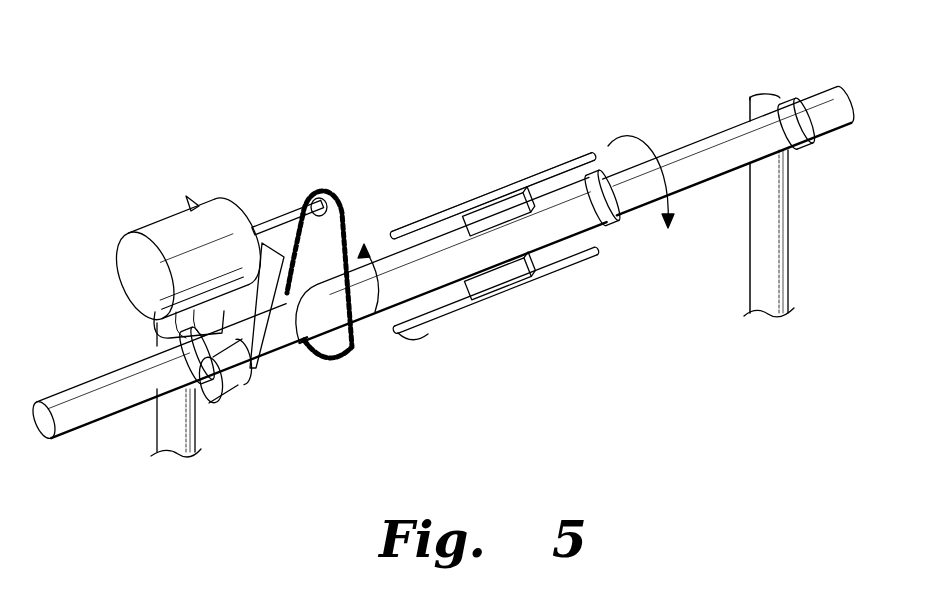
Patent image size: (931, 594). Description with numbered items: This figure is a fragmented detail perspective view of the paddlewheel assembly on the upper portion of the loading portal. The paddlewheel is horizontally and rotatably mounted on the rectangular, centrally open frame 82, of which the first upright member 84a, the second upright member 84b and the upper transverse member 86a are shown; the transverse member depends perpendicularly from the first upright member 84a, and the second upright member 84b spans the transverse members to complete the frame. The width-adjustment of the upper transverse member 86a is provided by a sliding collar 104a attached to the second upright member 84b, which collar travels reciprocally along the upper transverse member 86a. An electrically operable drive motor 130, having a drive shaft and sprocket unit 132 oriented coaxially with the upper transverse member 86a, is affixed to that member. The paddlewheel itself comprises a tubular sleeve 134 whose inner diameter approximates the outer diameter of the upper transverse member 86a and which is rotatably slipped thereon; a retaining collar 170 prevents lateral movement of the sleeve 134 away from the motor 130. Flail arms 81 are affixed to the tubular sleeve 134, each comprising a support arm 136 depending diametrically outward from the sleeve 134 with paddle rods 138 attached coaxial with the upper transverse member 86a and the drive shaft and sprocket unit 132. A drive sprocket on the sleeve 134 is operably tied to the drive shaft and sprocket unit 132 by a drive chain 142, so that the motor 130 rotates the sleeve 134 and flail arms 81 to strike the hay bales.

The flail arms 81 is at (531, 165).
The open frame 82 is at (775, 250).
The first upright member 84a is at (165, 433).
The second upright member 84b is at (770, 204).
The upper transverse member 86a is at (74, 408).
The clamp collar 104a is at (789, 105).
The drive motor 130 is at (213, 241).
The drive shaft and sprocket unit 132 is at (283, 214).
The tubular sleeve 134 is at (588, 223).
The support arm 136 is at (493, 211).
The paddle rods 138 is at (581, 157).
The drive chain 142 is at (343, 222).
The retaining collar 170 is at (623, 217).